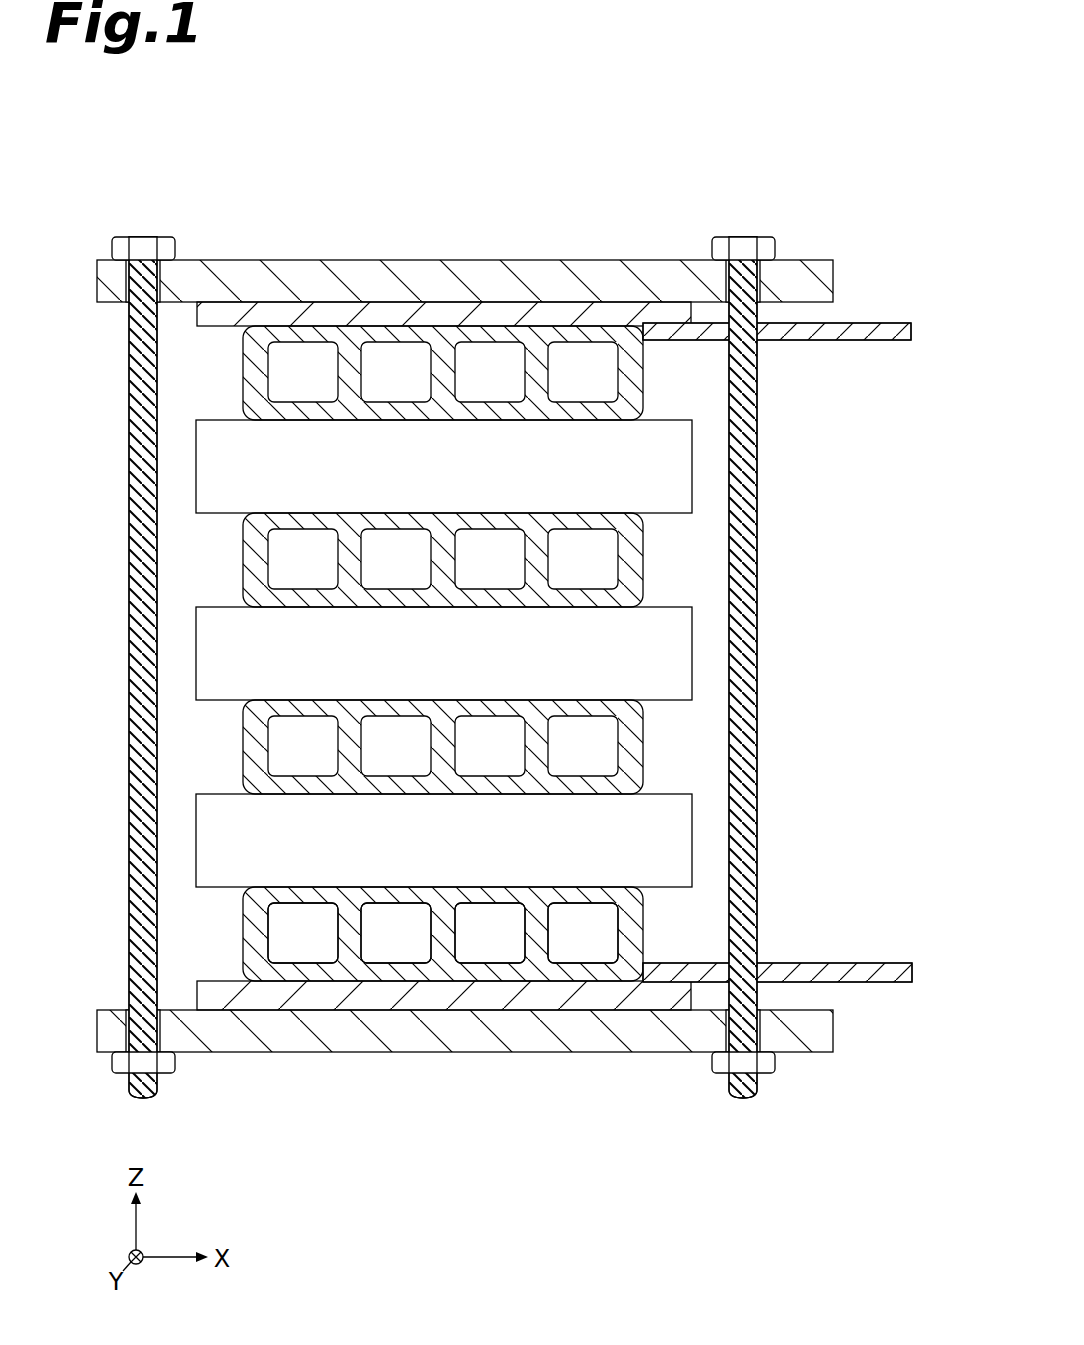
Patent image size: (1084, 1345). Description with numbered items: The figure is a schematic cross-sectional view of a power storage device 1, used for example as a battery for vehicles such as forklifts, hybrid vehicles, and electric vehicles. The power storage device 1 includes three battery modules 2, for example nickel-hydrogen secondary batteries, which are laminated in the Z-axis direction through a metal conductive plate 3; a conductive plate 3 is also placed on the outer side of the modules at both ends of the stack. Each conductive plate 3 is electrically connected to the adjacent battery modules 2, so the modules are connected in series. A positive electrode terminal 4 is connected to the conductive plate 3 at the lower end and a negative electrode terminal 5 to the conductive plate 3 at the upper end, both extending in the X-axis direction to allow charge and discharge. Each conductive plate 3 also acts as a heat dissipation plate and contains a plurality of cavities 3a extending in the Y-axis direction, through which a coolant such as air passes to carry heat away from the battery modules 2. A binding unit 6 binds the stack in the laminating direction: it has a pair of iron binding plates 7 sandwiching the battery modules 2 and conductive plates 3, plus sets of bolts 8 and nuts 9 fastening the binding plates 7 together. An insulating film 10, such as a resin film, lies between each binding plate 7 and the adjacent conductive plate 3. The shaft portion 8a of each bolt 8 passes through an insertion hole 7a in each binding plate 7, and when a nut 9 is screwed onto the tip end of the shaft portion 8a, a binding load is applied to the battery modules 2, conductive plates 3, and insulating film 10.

The power storage device 1 is at (760, 186).
The battery module 2 is at (670, 467).
The conductive plate 3 is at (645, 360).
The cavity 3a is at (283, 925).
The positive electrode terminal 4 is at (912, 970).
The negative electrode terminal 5 is at (912, 331).
The binding unit 6 is at (212, 186).
The binding plate 7 is at (330, 275).
The insertion hole 7a is at (132, 288).
The bolt 8 is at (143, 237).
The shaft portion 8a is at (129, 420).
The nut 9 is at (176, 1068).
The insulating film 10 is at (543, 312).